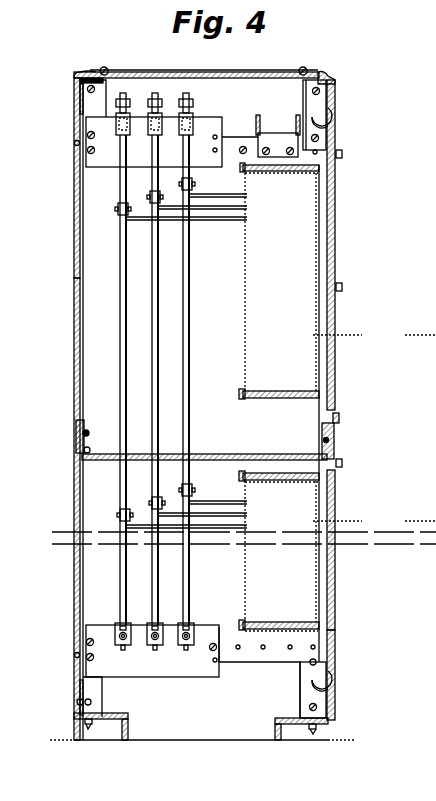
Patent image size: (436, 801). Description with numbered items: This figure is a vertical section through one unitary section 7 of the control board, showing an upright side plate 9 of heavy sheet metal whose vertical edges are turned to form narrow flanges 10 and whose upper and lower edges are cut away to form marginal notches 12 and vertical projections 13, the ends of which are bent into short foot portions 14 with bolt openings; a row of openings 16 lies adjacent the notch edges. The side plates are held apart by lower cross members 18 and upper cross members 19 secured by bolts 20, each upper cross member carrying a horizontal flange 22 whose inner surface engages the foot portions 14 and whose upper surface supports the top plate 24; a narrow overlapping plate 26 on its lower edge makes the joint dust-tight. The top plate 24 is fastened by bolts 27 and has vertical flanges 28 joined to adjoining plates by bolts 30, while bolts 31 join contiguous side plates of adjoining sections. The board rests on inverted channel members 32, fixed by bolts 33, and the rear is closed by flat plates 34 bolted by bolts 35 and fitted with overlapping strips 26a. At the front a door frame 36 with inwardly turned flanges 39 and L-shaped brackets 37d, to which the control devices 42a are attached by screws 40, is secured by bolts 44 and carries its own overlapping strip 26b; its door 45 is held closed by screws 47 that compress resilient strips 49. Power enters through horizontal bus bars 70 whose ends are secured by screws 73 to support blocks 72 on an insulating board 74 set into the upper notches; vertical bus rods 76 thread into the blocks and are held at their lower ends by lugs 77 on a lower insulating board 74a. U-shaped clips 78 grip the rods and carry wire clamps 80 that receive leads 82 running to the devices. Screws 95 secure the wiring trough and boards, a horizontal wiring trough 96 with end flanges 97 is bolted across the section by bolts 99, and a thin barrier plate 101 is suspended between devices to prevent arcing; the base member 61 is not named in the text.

The unitary section 7 is at (264, 72).
The side plate 9 is at (85, 312).
The flange 10 is at (83, 290).
The marginal notch 12 is at (232, 137).
The vertical projection 13 is at (303, 97).
The foot portion 14 is at (106, 85).
The opening 16 is at (263, 645).
The lower cross member 18 is at (76, 715).
The upper cross member 19 is at (77, 108).
The bolt 20 is at (80, 90).
The horizontal flange 22 is at (322, 77).
The top plate 24 is at (240, 73).
The overlapping plate 26 is at (328, 112).
The overlapping strip 26a is at (80, 430).
The overlapping strip 26b is at (326, 440).
The bolt 27 is at (88, 72).
The vertically projecting flange 28 is at (278, 73).
The bolt 30 is at (104, 69).
The bolt 31 is at (82, 80).
The inverted channel member 32 is at (126, 732).
The bolt 33 is at (88, 730).
The flat plate 34 is at (77, 343).
The bolt 35 is at (75, 142).
The door frame 36 is at (336, 445).
The L-shaped bracket 37d is at (280, 393).
The vertical flange 39 is at (318, 233).
The screw 40 is at (243, 395).
The control device 42a is at (374, 427).
The bolt 44 is at (330, 660).
The door 45 is at (330, 215).
The screw 47 is at (342, 155).
The resilient strip 49 is at (326, 260).
The base 61 is at (170, 741).
The horizontal bus bar 70 is at (123, 93).
The support block 72 is at (193, 102).
The screw 73 is at (186, 93).
The insulating board 74 is at (103, 160).
The insulating board 74a is at (152, 651).
The vertical bus rod 76 is at (186, 358).
The lug 77 is at (131, 640).
The U-shaped clip 78 is at (118, 212).
The wire clamp 80 is at (128, 225).
The wire lead 82 is at (210, 221).
The screw 95 is at (216, 153).
The horizontal wiring trough 96 is at (280, 137).
The vertical flange 97 is at (266, 155).
The bolt 99 is at (290, 155).
The barrier plate 101 is at (208, 455).